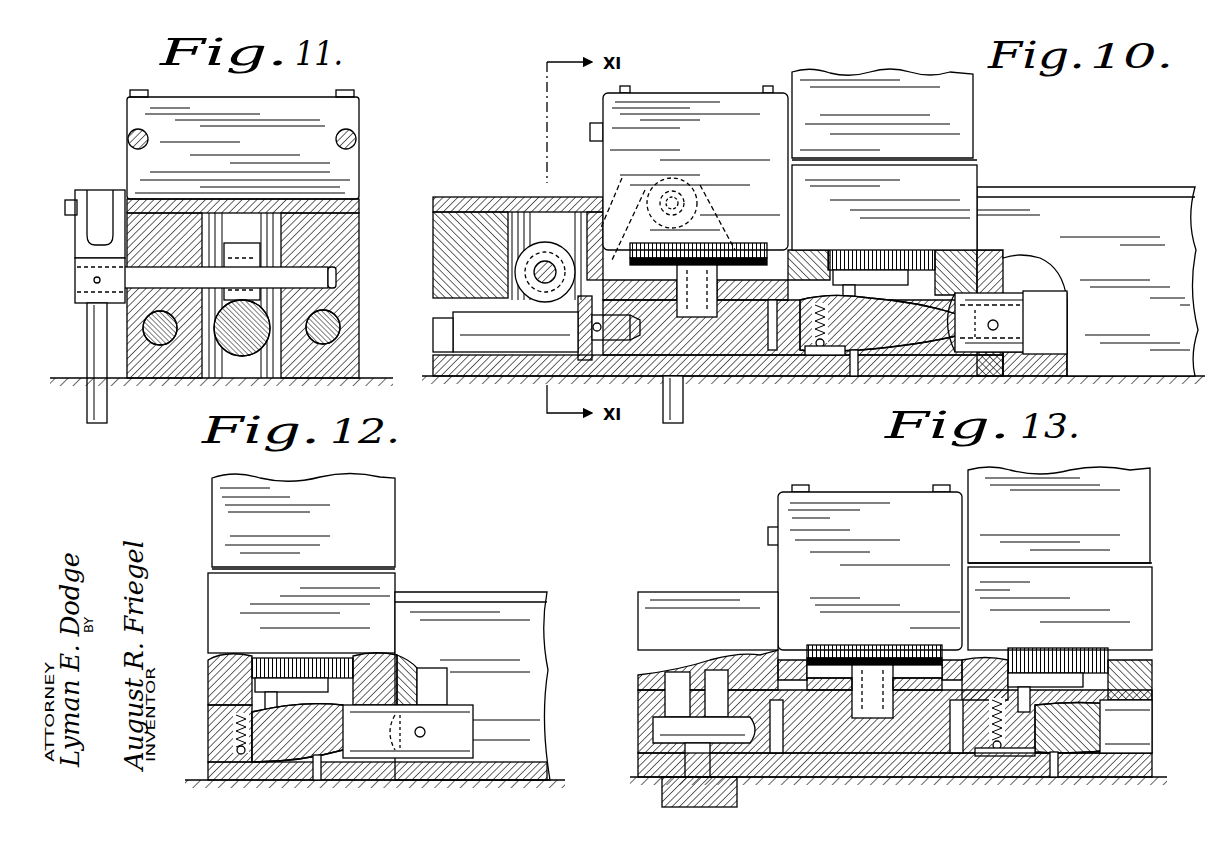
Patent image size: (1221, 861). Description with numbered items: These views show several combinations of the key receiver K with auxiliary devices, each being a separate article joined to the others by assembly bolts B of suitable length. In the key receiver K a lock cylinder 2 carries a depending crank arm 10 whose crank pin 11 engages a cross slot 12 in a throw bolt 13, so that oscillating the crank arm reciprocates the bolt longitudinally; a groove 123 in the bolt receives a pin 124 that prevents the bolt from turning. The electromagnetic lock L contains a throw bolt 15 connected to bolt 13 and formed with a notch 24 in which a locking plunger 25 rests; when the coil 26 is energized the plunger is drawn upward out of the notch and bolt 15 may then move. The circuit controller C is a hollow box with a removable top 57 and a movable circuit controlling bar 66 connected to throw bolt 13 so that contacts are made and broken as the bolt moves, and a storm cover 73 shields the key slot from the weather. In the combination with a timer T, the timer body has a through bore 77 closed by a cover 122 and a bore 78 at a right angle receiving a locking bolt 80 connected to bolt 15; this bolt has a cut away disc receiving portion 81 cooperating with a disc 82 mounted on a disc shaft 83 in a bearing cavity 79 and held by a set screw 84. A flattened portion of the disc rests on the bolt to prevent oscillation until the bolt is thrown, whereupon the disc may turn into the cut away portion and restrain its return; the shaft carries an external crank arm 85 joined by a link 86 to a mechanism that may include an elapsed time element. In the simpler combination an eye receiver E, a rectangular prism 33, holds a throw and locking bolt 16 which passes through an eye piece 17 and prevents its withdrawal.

In FIG. 10, the lock cylinder 2 is at (850, 250).
In FIG. 12, the lock cylinder 2 is at (280, 658).
In FIG. 10, the crank arm 10 is at (858, 270).
In FIG. 12, the crank arm 10 is at (302, 684).
In FIG. 13, the crank arm 10 is at (1052, 673).
In FIG. 10, the crank pin 11 is at (905, 255).
In FIG. 12, the crank pin 11 is at (250, 692).
In FIG. 13, the crank pin 11 is at (1008, 662).
In FIG. 10, the cross slot 12 is at (878, 286).
In FIG. 12, the cross slot 12 is at (316, 705).
In FIG. 13, the cross slot 12 is at (1045, 700).
In FIG. 10, the throw bolt 13 is at (906, 340).
In FIG. 12, the throw bolt 13 is at (302, 733).
In FIG. 13, the throw bolt 13 is at (1130, 712).
In FIG. 10, the throw bolt 15 is at (740, 356).
In FIG. 13, the throw bolt 15 is at (862, 745).
In FIG. 13, the throw and locking bolt 16 is at (658, 740).
In FIG. 13, the eye piece 17 is at (660, 800).
In FIG. 10, the notch 24 is at (792, 252).
In FIG. 10, the locking plunger 25 is at (745, 246).
In FIG. 13, the locking plunger 25 is at (880, 645).
In FIG. 10, the coil 26 is at (700, 242).
In FIG. 13, the coil 26 is at (826, 650).
In FIG. 13, the rectangular prism 33 is at (652, 603).
In FIG. 10, the top 57 is at (1073, 187).
In FIG. 12, the top 57 is at (443, 592).
In FIG. 10, the movable circuit controlling bar 66 is at (1008, 322).
In FIG. 10, the storm cover 73 is at (977, 100).
In FIG. 11, the through bore 77 is at (204, 378).
In FIG. 10, the through bore 77 is at (522, 360).
In FIG. 10, the through bore 78 is at (445, 312).
In FIG. 11, the bearing cavity 79 is at (332, 280).
In FIG. 11, the locking bolt 80 is at (158, 378).
In FIG. 10, the locking bolt 80 is at (478, 352).
In FIG. 10, the cut away disc receiving portion 81 is at (492, 290).
In FIG. 10, the disc 82 is at (552, 243).
In FIG. 11, the disc shaft 83 is at (340, 214).
In FIG. 11, the set screw 84 is at (226, 255).
In FIG. 10, the set screw 84 is at (548, 240).
In FIG. 11, the crank arm 85 is at (92, 243).
In FIG. 10, the crank arm 85 is at (640, 195).
In FIG. 11, the link 86 is at (96, 424).
In FIG. 10, the link 86 is at (684, 426).
In FIG. 11, the cover 122 is at (278, 200).
In FIG. 10, the cover 122 is at (487, 197).
In FIG. 10, the groove 123 is at (815, 360).
In FIG. 12, the groove 123 is at (260, 762).
In FIG. 13, the groove 123 is at (1022, 760).
In FIG. 10, the pin 124 is at (855, 365).
In FIG. 12, the pin 124 is at (315, 770).
In FIG. 13, the pin 124 is at (1060, 770).
In FIG. 11, the electromagnetic lock L is at (137, 90).
In FIG. 10, the electromagnetic lock L is at (718, 90).
In FIG. 13, the electromagnetic lock L is at (895, 490).
In FIG. 10, the key receiver K is at (934, 62).
In FIG. 12, the key receiver K is at (400, 504).
In FIG. 13, the key receiver K is at (1120, 468).
In FIG. 10, the circuit controller C is at (1135, 178).
In FIG. 12, the circuit controller C is at (505, 590).
In FIG. 11, the timer T is at (202, 192).
In FIG. 10, the timer T is at (526, 182).
In FIG. 11, the assembly bolts B is at (150, 322).
In FIG. 13, the eye receiver E is at (718, 590).